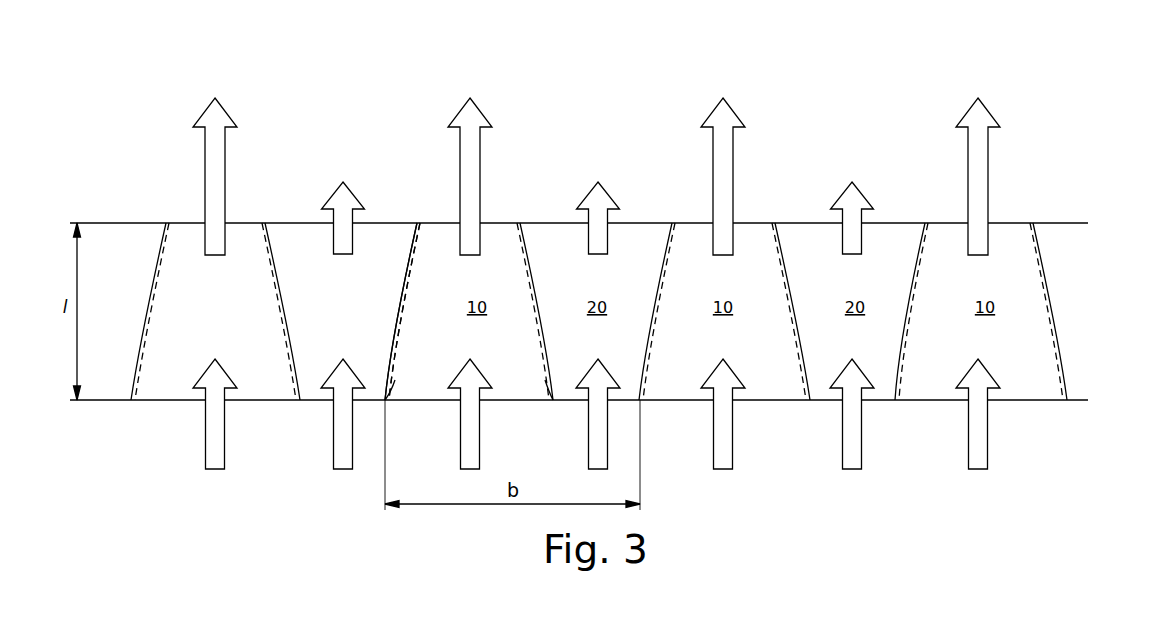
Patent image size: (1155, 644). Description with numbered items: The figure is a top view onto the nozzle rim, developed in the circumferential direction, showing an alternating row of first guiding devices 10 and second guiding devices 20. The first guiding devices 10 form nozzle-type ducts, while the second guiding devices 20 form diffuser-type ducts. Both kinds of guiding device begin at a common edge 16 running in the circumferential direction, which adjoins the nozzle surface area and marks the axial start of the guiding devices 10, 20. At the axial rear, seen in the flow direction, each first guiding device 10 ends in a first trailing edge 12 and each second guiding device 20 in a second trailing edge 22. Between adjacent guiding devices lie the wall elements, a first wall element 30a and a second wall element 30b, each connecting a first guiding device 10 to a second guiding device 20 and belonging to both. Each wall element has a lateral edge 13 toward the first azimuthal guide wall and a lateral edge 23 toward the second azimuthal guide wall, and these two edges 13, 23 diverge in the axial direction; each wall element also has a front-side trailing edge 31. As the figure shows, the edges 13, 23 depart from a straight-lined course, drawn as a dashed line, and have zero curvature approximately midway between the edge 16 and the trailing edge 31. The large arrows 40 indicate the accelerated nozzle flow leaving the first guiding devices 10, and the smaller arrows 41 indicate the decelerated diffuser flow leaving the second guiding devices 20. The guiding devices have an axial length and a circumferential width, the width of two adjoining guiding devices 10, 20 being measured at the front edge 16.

The first guiding device 10 is at (221, 271).
The second guiding device 20 is at (378, 311).
The first trailing edge 12 is at (245, 221).
The second trailing edge 22 is at (293, 221).
The edge running in the circumferential direction 16 is at (252, 401).
The lateral edge of first guiding device 13 is at (393, 401).
The lateral edge of second guiding device 23 is at (547, 401).
The first wall element 30a is at (417, 243).
The second wall element 30b is at (523, 253).
The front-side trailing edge 31 is at (417, 212).
The arrows indicating the nozzle flow 40 is at (478, 106).
The arrows indicating the diffuser flow 41 is at (357, 190).